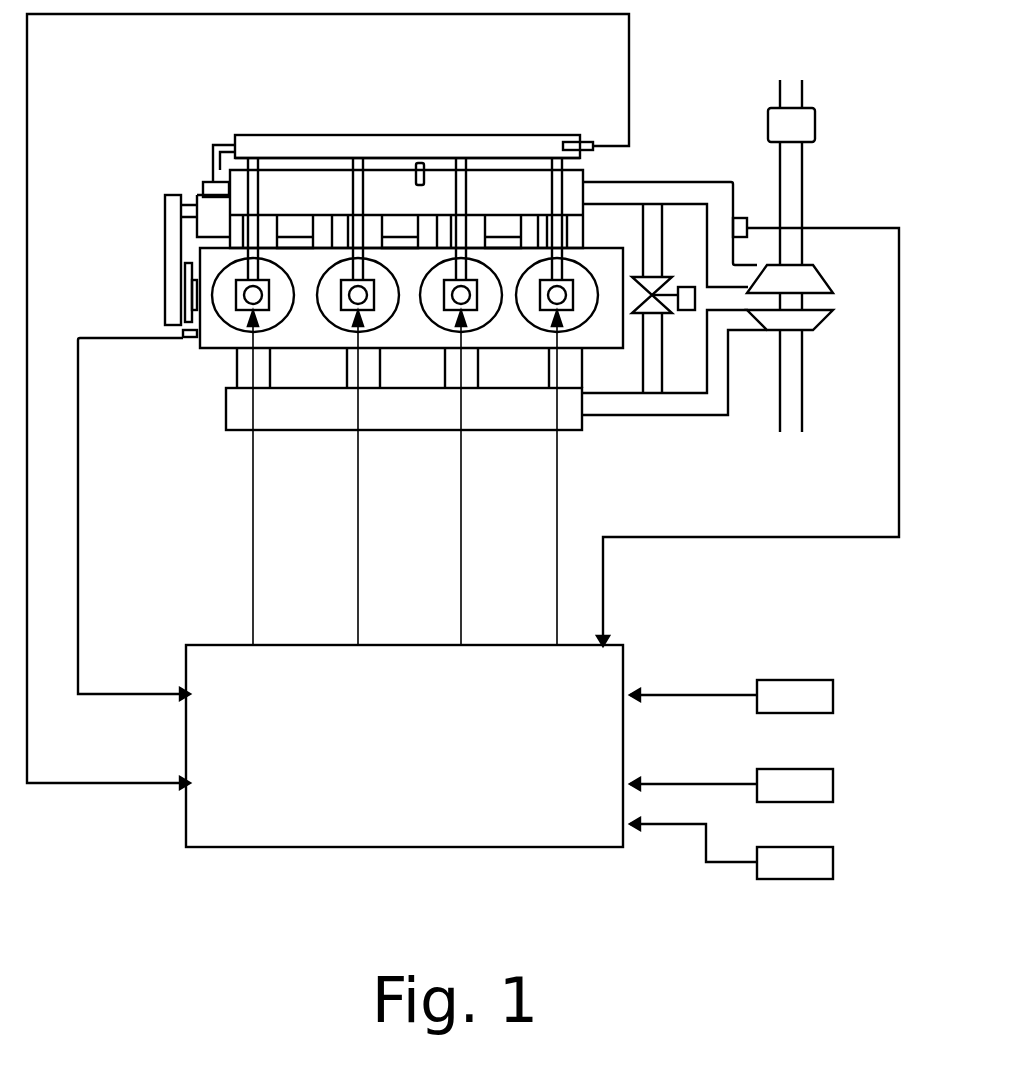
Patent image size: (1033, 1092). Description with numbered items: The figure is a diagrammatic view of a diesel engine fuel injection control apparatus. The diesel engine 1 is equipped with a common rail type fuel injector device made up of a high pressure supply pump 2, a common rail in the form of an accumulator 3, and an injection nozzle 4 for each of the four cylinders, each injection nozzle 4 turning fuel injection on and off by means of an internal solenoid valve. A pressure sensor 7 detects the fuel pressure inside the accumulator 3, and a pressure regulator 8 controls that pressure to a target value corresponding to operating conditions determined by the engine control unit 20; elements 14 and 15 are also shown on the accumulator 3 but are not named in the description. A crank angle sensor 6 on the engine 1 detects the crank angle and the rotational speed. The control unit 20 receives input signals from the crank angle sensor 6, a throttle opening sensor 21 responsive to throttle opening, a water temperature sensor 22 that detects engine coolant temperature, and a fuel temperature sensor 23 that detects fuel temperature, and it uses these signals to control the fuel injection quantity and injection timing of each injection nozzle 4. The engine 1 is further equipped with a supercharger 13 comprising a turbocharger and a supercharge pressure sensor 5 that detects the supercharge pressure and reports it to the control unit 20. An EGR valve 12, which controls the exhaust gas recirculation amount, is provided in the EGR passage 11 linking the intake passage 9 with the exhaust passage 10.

The diesel engine 1 is at (210, 333).
The high pressure supply pump 2 is at (200, 198).
The accumulator 3 is at (293, 143).
The injection nozzle 4 is at (250, 297).
The supercharge pressure sensor 5 is at (737, 218).
The crank angle sensor 6 is at (180, 340).
The pressure sensor 7 is at (595, 143).
The pressure regulator 8 is at (207, 182).
The intake passage 9 is at (664, 188).
The exhaust passage 10 is at (698, 406).
The EGR passage 11 is at (655, 235).
The EGR valve 12 is at (690, 312).
The supercharger 13 is at (812, 322).
The fuel pressure sensor 14 is at (420, 158).
The fuel supply pump line 15 is at (382, 157).
The engine control unit 20 is at (443, 848).
The throttle opening sensor 21 is at (835, 693).
The water temperature sensor 22 is at (835, 782).
The fuel temperature sensor 23 is at (835, 860).